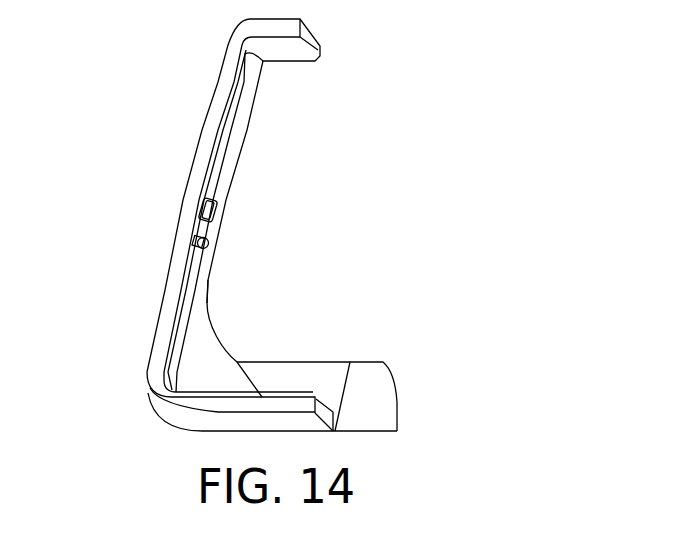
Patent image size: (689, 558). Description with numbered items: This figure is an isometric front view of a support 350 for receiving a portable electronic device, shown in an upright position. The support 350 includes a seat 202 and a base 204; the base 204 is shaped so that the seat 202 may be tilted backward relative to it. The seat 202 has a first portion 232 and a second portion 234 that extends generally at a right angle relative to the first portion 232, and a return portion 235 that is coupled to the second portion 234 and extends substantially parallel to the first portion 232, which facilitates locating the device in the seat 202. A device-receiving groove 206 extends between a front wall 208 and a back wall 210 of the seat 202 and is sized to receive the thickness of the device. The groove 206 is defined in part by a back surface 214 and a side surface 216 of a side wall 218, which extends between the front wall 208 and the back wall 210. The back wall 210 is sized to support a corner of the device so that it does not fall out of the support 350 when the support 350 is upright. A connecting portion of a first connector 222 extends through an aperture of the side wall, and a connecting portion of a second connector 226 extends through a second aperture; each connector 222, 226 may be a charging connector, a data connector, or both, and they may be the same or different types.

The support 350 is at (423, 290).
The seat 202 is at (147, 390).
The base 204 is at (396, 396).
The device-receiving groove 206 is at (227, 123).
The front wall 208 is at (165, 302).
The back wall 210 is at (202, 351).
The back surface 214 is at (207, 265).
The side surface 216 is at (185, 308).
The side wall 218 is at (216, 174).
The first connector 222 is at (205, 202).
The second connector 226 is at (195, 242).
The first portion 232 is at (215, 414).
The second portion 234 is at (208, 108).
The return portion 235 is at (266, 27).